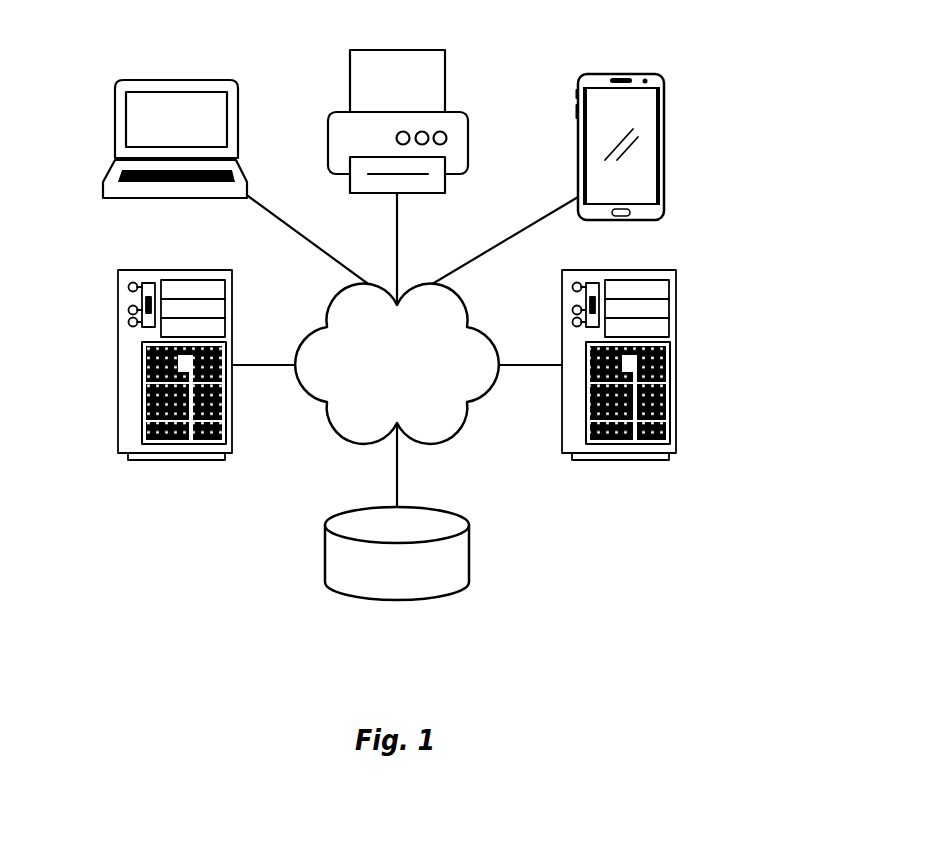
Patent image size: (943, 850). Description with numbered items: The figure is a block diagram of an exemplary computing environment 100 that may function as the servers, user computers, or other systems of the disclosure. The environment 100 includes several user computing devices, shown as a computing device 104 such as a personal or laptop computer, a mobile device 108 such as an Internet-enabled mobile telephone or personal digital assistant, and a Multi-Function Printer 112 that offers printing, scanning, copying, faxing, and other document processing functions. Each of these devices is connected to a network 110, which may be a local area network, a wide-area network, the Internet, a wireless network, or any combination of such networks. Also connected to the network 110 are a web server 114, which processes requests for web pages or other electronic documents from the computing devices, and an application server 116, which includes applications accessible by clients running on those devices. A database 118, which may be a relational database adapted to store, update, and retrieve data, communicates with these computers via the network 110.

The computing environment 100 is at (760, 64).
The computing device 104 is at (115, 122).
The mobile device 108 is at (664, 148).
The network 110 is at (442, 433).
The Multi-Function Printer 112 is at (349, 82).
The web server 114 is at (118, 363).
The application server 116 is at (677, 363).
The database 118 is at (470, 552).